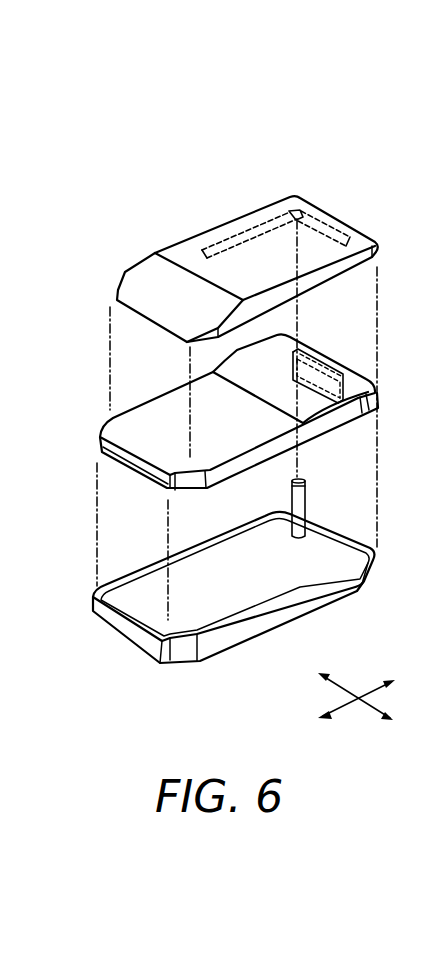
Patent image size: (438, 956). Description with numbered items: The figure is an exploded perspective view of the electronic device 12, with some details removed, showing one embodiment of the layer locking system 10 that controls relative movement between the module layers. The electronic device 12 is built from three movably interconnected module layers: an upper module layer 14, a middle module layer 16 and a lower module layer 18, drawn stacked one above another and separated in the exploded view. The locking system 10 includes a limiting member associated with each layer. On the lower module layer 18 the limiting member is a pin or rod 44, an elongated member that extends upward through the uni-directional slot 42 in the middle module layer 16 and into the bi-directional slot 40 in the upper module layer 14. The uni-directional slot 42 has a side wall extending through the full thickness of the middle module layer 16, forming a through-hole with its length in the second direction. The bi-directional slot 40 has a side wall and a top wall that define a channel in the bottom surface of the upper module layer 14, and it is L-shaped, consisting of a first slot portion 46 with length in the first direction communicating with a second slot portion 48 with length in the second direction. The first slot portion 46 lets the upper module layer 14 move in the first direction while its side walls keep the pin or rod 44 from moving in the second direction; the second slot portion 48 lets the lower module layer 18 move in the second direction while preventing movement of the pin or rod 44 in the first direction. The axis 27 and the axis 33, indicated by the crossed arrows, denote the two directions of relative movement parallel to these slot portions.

The layer locking system 10 is at (322, 490).
The electronic device 12 is at (297, 114).
The upper module layer 14 is at (120, 298).
The middle module layer 16 is at (103, 448).
The lower module layer 18 is at (105, 621).
The axis 27 is at (358, 699).
The axis 33 is at (358, 699).
The bi-directional slot 40 is at (252, 202).
The uni-directional slot 42 is at (303, 352).
The pin or rod 44 is at (305, 507).
The first slot portion 46 is at (220, 240).
The second slot portion 48 is at (327, 211).